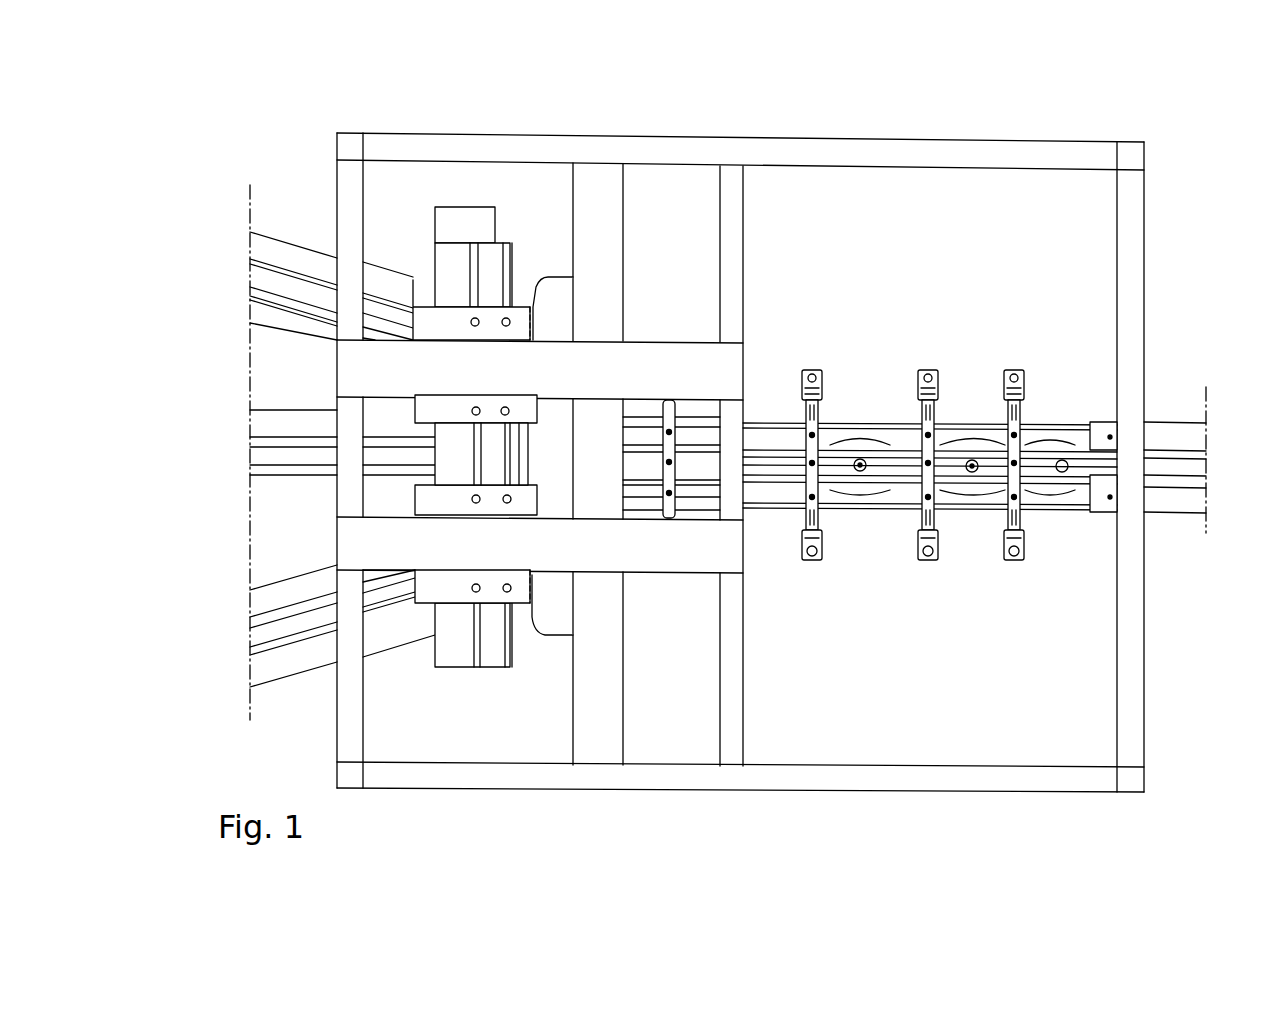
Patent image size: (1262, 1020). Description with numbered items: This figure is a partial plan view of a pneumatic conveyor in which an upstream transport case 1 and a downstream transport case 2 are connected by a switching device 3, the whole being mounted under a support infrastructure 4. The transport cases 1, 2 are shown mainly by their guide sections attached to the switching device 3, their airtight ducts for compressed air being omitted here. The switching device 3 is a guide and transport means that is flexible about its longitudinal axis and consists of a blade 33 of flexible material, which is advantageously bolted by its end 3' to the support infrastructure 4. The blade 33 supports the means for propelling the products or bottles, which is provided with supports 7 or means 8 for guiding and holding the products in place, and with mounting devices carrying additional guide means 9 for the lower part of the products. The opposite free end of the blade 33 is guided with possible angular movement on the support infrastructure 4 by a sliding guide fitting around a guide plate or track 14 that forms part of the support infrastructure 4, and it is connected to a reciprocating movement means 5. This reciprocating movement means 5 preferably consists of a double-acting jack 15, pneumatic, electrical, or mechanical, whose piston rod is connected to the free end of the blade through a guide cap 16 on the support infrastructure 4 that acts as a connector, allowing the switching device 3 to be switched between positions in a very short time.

The upstream transport case 1 is at (265, 600).
The downstream transport case 2 is at (1173, 435).
The switching device 3 is at (870, 642).
The end of the flexible transport and guide means 3' is at (1154, 538).
The blade 33 is at (953, 455).
The support infrastructure 4 is at (997, 157).
The reciprocating movement means 5 is at (392, 116).
The supports 7 is at (925, 398).
The means for guiding and holding in place 8 is at (1062, 483).
The additional guide means 9 is at (1050, 507).
The guide plate or track 14 is at (560, 310).
The double-acting jack 15 is at (462, 217).
The guide cap 16 is at (497, 270).